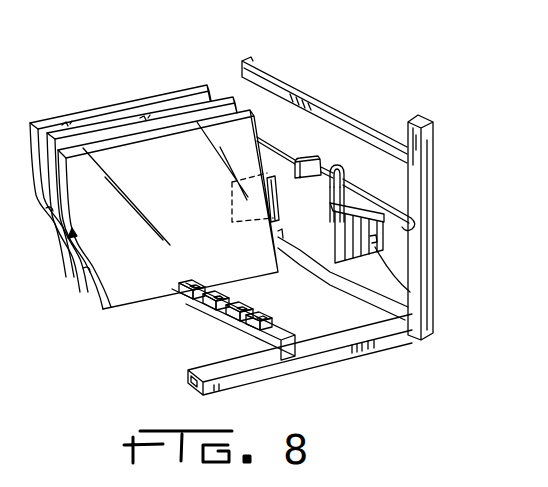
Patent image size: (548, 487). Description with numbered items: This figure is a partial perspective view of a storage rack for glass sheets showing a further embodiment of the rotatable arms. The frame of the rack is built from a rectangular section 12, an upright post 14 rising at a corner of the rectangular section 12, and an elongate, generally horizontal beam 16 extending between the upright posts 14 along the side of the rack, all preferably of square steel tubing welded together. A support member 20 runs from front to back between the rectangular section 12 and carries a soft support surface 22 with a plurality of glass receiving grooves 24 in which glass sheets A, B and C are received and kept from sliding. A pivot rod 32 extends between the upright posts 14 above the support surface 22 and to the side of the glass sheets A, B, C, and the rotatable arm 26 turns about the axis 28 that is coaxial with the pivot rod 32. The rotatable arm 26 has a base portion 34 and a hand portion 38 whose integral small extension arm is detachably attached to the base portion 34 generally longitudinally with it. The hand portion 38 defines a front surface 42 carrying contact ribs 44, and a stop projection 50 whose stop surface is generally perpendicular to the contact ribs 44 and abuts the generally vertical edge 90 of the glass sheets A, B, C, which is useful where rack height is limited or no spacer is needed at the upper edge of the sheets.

The rectangular section 12 is at (330, 356).
The upright post 14 is at (435, 277).
The beam 16 is at (325, 103).
The support member 20 is at (237, 330).
The support surface 22 is at (193, 286).
The glass receiving groove 24 is at (214, 302).
The rotatable arm 26 is at (366, 273).
The axis 28 is at (173, 87).
The pivot rod 32 is at (400, 212).
The base portion 34 is at (300, 160).
The hand portion 38 is at (330, 222).
The front surface 42 is at (430, 308).
The contact rib 44 is at (338, 260).
The stop projection 50 is at (270, 218).
The generally vertical edge 90 is at (282, 236).
The glass sheet A is at (118, 300).
The glass sheet B is at (83, 282).
The glass sheet C is at (52, 210).